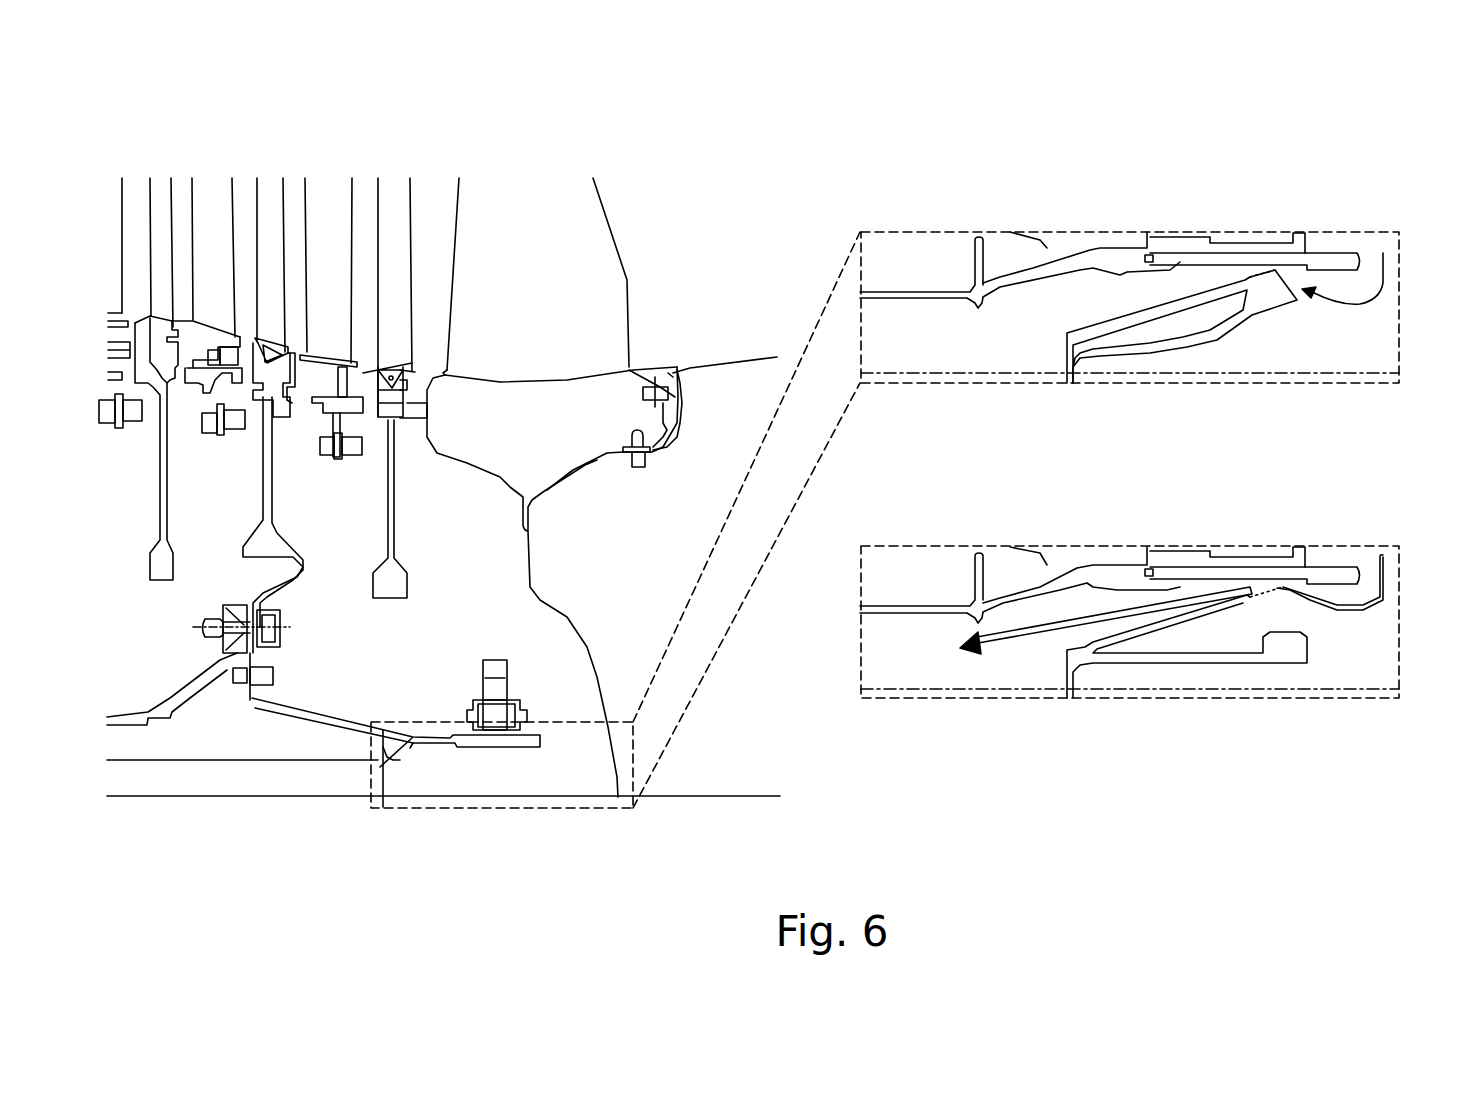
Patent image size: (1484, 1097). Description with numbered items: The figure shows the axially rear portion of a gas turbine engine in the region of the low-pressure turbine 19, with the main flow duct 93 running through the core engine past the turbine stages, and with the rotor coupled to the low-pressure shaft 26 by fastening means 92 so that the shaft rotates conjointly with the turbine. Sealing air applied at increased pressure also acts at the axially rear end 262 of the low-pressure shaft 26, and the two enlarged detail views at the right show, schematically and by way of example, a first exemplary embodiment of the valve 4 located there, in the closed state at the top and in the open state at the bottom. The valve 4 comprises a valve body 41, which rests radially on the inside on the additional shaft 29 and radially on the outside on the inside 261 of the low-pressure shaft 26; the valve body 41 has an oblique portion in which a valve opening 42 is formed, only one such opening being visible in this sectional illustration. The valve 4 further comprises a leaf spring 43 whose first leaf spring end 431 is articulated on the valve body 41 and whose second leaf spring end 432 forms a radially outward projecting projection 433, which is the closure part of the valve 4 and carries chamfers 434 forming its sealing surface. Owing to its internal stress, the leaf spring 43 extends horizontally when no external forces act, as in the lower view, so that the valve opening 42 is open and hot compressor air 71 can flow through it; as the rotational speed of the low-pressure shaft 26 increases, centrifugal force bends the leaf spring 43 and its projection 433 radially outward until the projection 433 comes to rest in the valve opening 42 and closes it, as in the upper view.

The low-pressure turbine 19 is at (283, 153).
The main flow duct 93 is at (446, 307).
The fastening means 92 is at (282, 640).
The low-pressure shaft 26 is at (188, 760).
The additional shaft 29 is at (345, 800).
The valve 4 is at (533, 813).
The axially rear end of the low-pressure shaft 262 is at (549, 768).
The inside of the low-pressure shaft 261 is at (1093, 270).
The valve opening 42 is at (1247, 283).
The valve body 41 is at (1103, 327).
The leaf spring 43 is at (1207, 345).
The projection 433 is at (1273, 297).
The chamfers 434 is at (1267, 633).
The first leaf spring end 431 is at (1093, 688).
The second leaf spring end 432 is at (1299, 677).
The hot compressor air 71 is at (1380, 293).